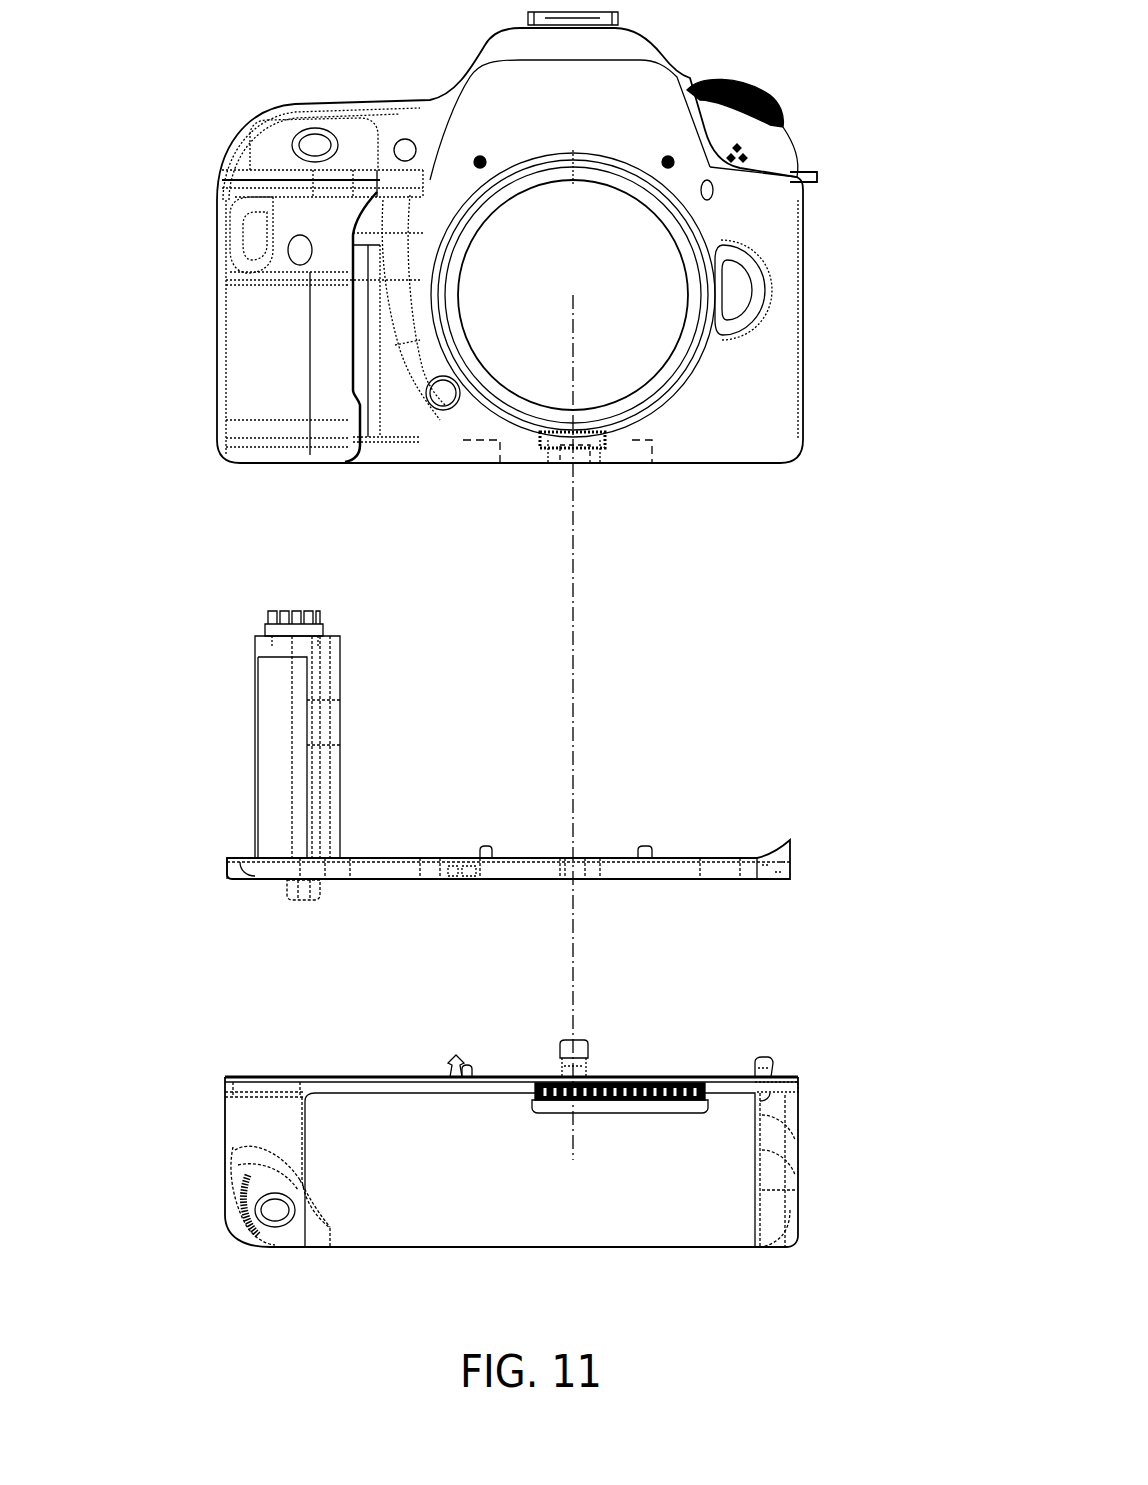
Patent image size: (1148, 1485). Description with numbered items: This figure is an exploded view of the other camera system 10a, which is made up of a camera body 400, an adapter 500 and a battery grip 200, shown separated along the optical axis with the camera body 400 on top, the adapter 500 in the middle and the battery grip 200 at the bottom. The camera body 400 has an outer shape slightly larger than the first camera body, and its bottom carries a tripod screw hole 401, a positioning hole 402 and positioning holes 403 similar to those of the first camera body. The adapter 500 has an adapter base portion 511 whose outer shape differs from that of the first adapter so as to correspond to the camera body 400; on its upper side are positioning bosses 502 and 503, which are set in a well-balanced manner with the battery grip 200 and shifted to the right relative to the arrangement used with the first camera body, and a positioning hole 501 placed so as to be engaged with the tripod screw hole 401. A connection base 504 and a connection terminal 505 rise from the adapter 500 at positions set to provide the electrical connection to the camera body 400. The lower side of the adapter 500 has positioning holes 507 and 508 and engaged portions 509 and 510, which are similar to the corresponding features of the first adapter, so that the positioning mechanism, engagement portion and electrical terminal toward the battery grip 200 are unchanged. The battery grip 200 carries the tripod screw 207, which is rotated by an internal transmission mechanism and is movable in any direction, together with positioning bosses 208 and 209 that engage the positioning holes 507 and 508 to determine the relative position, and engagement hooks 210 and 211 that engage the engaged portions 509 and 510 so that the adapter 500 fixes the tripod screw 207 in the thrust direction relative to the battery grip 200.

The camera system 10a is at (858, 52).
The camera body 400 is at (766, 241).
The tripod screw hole 401 is at (577, 463).
The positioning hole 402 is at (650, 463).
The positioning holes 403 is at (488, 465).
The adapter 500 is at (790, 843).
The positioning hole 501 is at (578, 845).
The positioning boss 502 is at (642, 848).
The positioning boss 503 is at (483, 848).
The connection base 504 is at (277, 723).
The connection terminal 505 is at (300, 603).
The positioning hole 507 is at (760, 880).
The positioning hole 508 is at (470, 878).
The engaged portion 509 is at (775, 868).
The engaged portion 510 is at (452, 872).
The adapter base portion 511 is at (228, 868).
The battery grip 200 is at (698, 1225).
The tripod screw 207 is at (590, 1058).
The positioning boss 208 is at (775, 1078).
The positioning boss 209 is at (470, 1068).
The engagement hook 210 is at (452, 1058).
The engagement hook 211 is at (775, 1057).